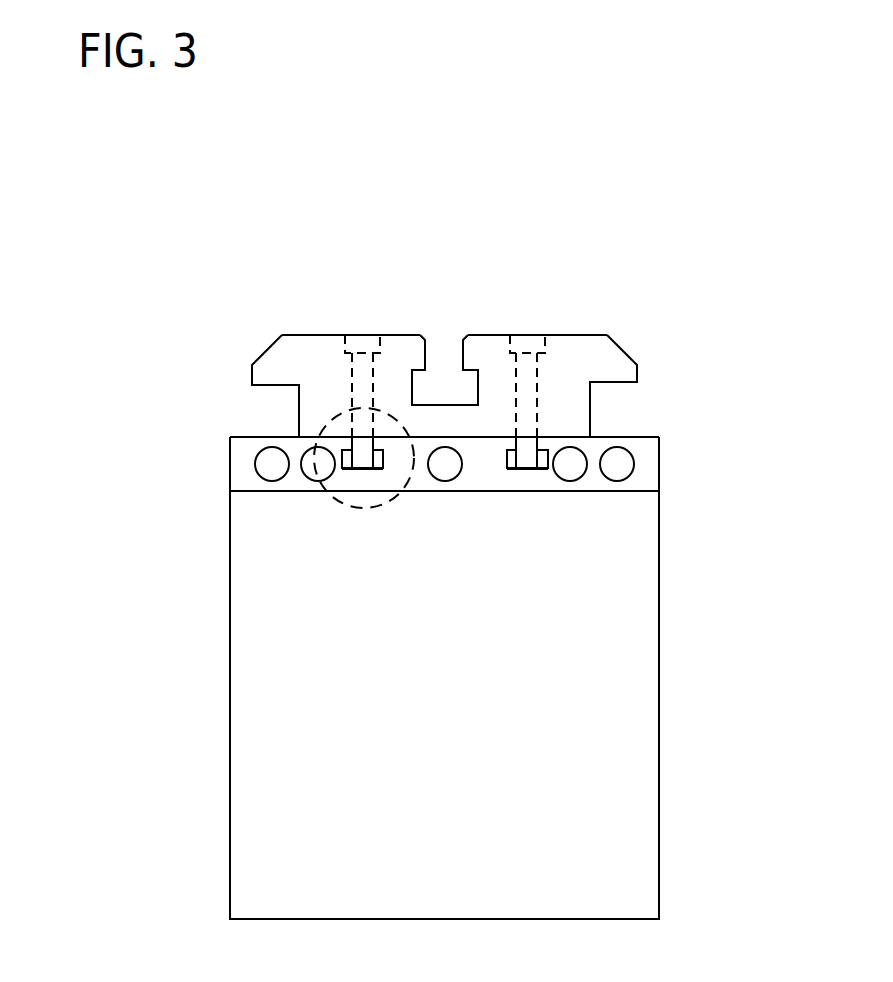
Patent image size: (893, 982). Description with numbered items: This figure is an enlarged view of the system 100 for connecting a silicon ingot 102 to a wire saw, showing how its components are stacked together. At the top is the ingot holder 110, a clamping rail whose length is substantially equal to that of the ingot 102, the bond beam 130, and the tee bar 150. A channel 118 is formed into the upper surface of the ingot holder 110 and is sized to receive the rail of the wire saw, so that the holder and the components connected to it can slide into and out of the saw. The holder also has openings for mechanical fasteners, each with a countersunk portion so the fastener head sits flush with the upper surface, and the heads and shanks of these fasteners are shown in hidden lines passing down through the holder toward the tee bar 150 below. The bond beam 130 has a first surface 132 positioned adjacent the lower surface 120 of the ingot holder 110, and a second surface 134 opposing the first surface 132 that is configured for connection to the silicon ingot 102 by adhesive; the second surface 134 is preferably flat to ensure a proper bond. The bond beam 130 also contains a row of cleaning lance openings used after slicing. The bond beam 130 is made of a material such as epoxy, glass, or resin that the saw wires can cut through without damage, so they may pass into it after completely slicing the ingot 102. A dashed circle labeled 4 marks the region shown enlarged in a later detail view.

The system 100 is at (564, 170).
The silicon ingot 102 is at (660, 600).
The ingot holder 110 is at (640, 340).
The channel 118 is at (450, 380).
The lower surface 120 is at (573, 437).
The bond beam 130 is at (672, 478).
The first surface 132 is at (482, 437).
The second surface 134 is at (434, 494).
The tee bar 150 is at (524, 436).
The detail region of FIG. 4 is at (327, 426).